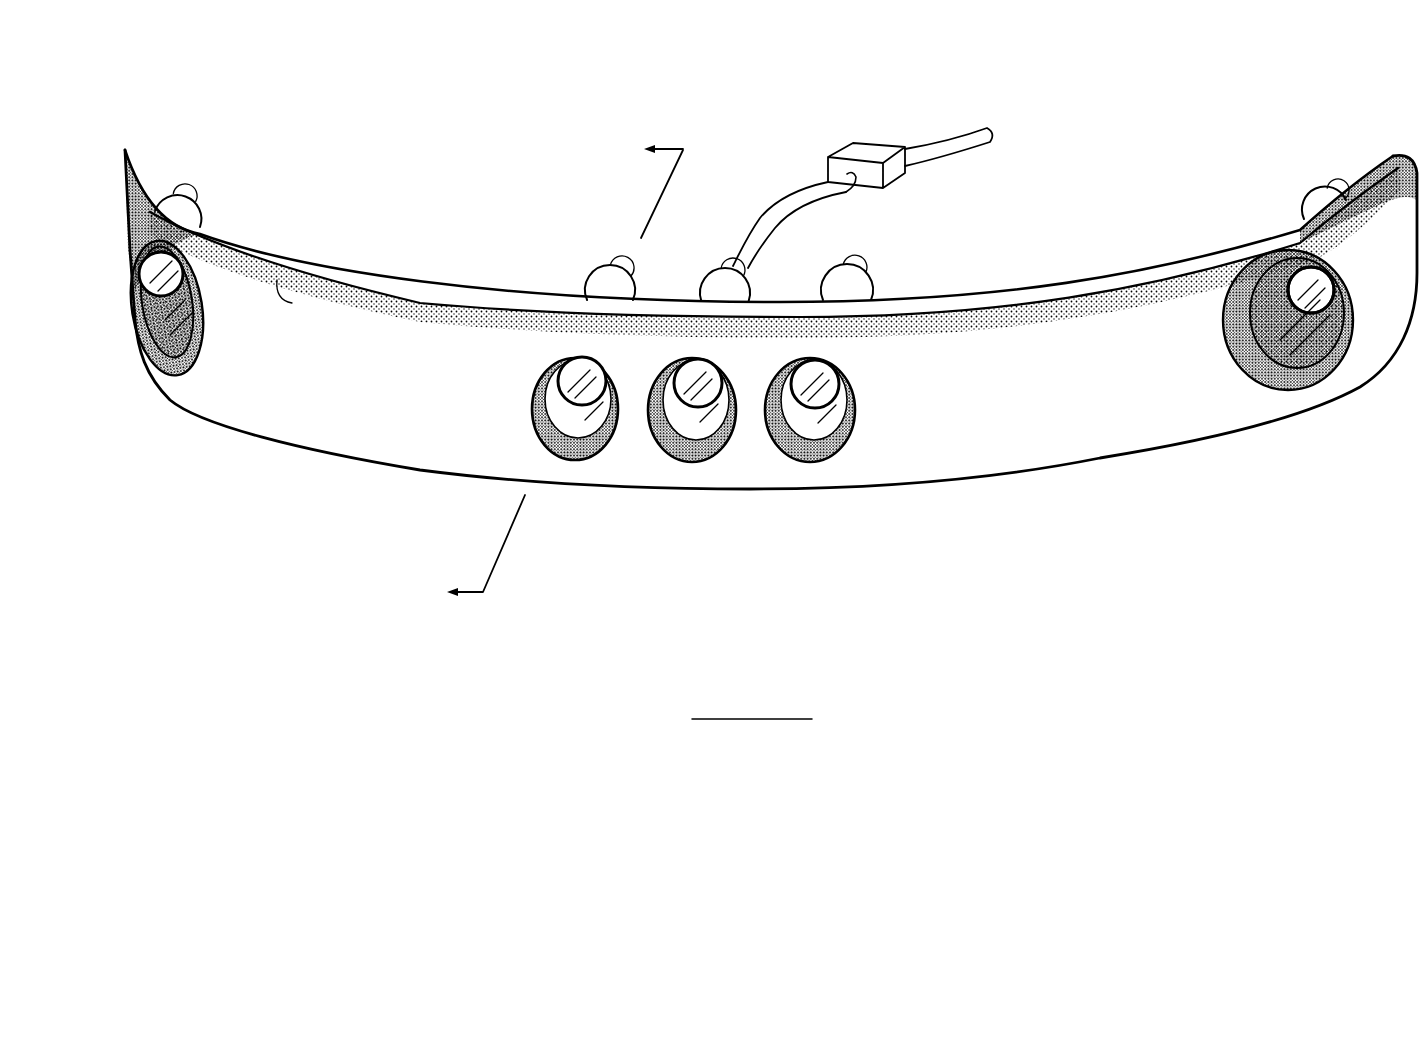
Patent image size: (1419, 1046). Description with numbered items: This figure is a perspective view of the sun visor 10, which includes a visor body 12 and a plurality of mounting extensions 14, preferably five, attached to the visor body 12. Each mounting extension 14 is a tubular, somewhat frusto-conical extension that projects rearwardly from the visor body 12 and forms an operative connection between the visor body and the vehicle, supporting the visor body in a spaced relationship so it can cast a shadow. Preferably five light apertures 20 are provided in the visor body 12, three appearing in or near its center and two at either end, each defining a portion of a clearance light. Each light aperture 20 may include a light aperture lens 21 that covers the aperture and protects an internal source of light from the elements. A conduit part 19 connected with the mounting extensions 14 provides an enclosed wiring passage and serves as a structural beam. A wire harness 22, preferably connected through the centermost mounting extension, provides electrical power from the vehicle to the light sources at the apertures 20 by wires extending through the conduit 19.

The sun visor 10 is at (386, 135).
The visor body 12 is at (300, 262).
The mounting extensions 14 is at (197, 212).
The conduit part 19 is at (1332, 305).
The light aperture 20 is at (215, 367).
The light aperture lens 21 is at (175, 315).
The wire harness 22 is at (852, 137).